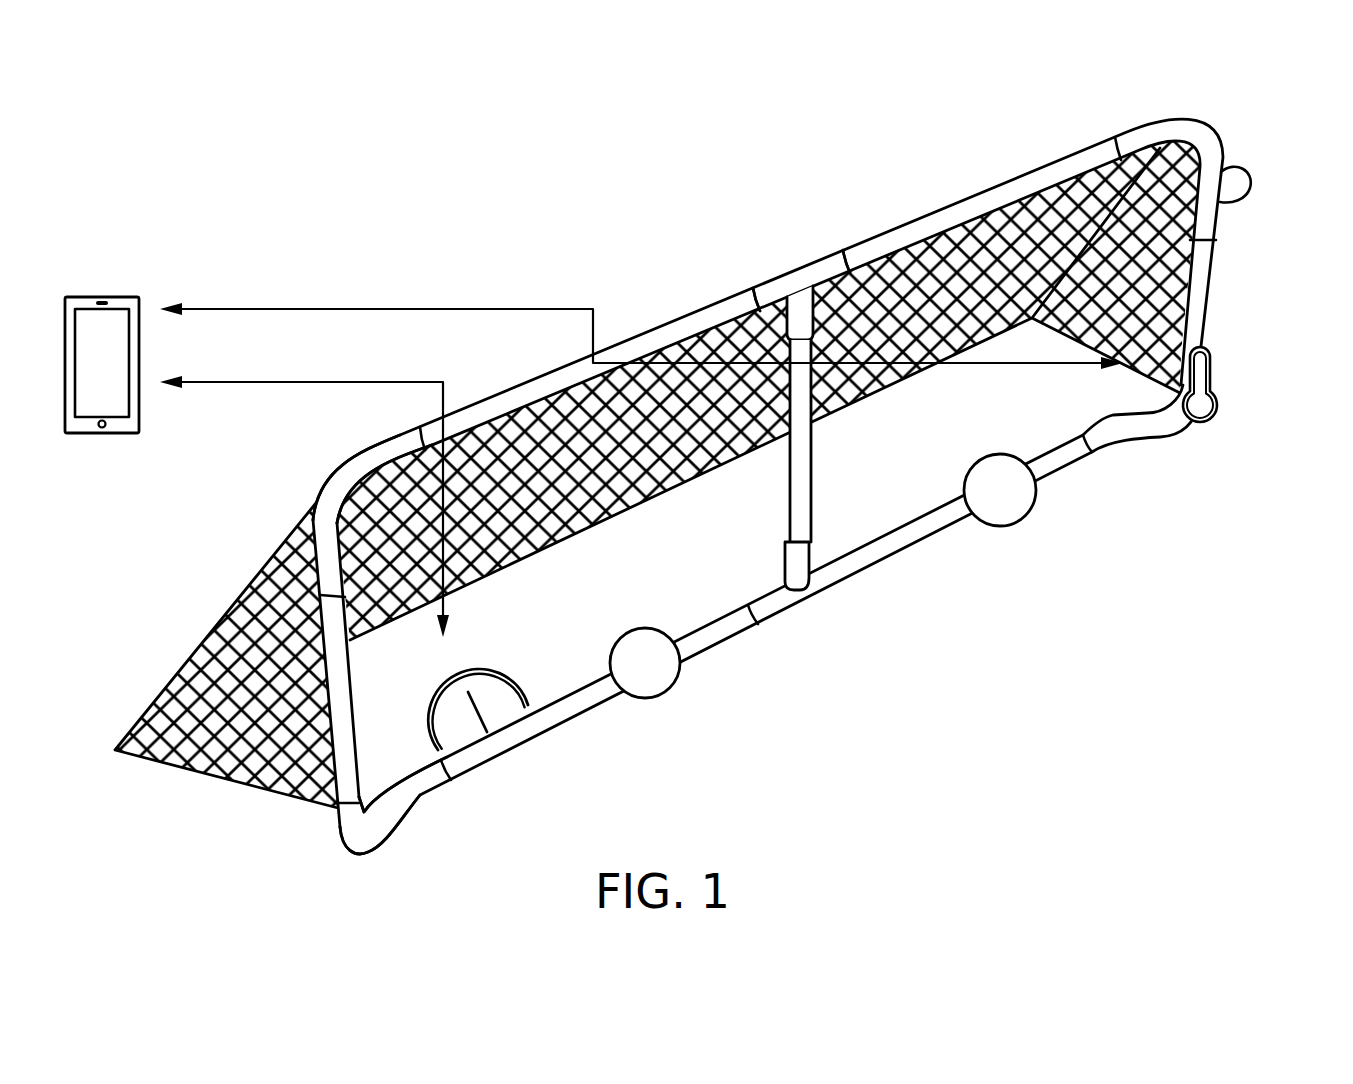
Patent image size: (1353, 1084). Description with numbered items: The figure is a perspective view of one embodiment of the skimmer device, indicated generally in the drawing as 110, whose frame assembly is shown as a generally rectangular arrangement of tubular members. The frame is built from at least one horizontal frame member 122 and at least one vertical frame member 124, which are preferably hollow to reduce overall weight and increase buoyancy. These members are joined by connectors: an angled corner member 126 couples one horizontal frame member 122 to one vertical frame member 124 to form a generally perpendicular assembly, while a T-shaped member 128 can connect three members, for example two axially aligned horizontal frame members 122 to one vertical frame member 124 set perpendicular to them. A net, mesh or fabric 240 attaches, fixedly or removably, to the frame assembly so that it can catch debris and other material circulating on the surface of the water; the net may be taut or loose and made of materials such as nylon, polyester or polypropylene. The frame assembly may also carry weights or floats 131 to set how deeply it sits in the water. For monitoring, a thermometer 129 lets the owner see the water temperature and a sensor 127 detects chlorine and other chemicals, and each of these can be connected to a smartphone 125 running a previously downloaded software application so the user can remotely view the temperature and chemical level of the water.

The smart soccer goal system 110 is at (844, 237).
The horizontal frame member 122 is at (628, 347).
The vertical frame member 124 is at (800, 483).
The smartphone 125 is at (70, 297).
The angled corner member 126 is at (333, 493).
The sensor 127 is at (528, 705).
The T-shaped member 128 is at (790, 286).
The thermometer 129 is at (1214, 362).
The weights or floats 131 is at (1000, 490).
The net, mesh or fabric 240 is at (522, 340).